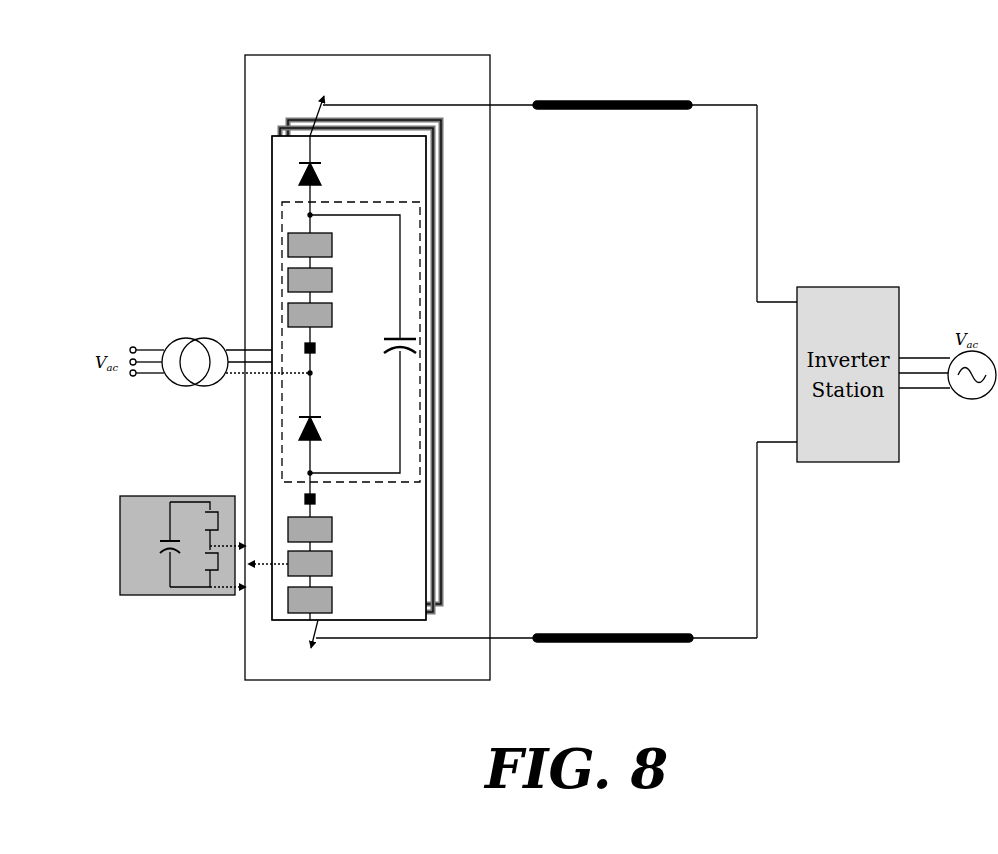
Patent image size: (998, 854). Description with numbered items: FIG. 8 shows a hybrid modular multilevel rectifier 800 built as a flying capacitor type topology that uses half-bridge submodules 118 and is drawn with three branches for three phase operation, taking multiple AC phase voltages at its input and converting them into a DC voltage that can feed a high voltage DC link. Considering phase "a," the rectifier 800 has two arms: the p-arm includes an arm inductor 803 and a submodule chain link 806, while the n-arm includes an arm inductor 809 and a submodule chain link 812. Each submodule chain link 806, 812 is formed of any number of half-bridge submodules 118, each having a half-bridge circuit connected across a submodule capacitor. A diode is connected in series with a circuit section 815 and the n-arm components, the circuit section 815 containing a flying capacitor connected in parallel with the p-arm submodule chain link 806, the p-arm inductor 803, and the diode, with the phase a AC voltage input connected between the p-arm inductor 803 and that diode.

The hybrid modular multilevel rectifier 800 is at (486, 367).
The submodule chain link 806 is at (287, 244).
The arm inductor 803 is at (289, 340).
The circuit section 815 is at (282, 431).
The arm inductor 809 is at (326, 501).
The submodule chain link 812 is at (337, 539).
The half-bridge submodule 118 is at (109, 499).